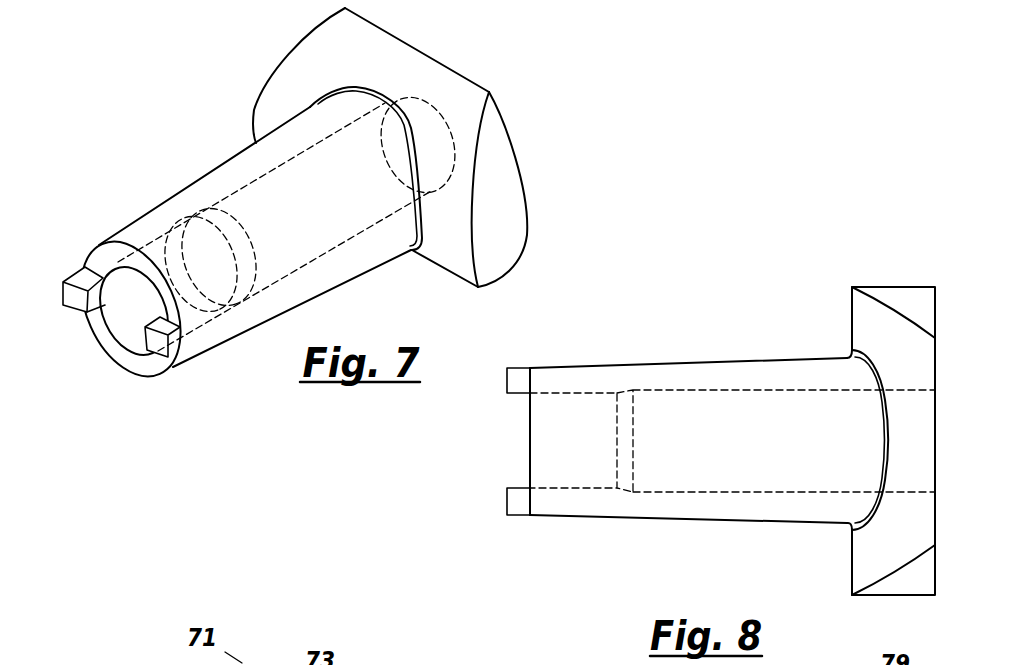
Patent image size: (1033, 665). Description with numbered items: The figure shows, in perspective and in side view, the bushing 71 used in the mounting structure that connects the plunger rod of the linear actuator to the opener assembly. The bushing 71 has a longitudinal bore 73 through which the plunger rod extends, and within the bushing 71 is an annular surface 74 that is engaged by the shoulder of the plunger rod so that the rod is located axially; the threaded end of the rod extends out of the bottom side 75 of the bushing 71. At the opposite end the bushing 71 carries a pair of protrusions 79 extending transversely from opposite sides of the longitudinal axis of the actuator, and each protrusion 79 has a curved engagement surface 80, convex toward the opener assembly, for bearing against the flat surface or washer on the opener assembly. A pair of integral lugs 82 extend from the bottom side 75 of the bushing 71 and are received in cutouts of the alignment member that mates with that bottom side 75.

In FIG. 7, the bushing 71 is at (150, 212).
In FIG. 8, the bushing 71 is at (722, 358).
In FIG. 7, the longitudinal bore 73 is at (123, 318).
In FIG. 7, the annular surface 74 is at (227, 237).
In FIG. 8, the annular surface 74 is at (622, 402).
In FIG. 7, the bottom side 75 is at (102, 258).
In FIG. 8, the bottom side 75 is at (530, 450).
In FIG. 7, the protrusions 79 is at (308, 70).
In FIG. 8, the protrusions 79 is at (870, 295).
In FIG. 7, the curved engagement surface 80 is at (263, 104).
In FIG. 8, the curved engagement surface 80 is at (858, 333).
In FIG. 7, the integral lugs 82 is at (78, 302).
In FIG. 8, the integral lugs 82 is at (517, 385).